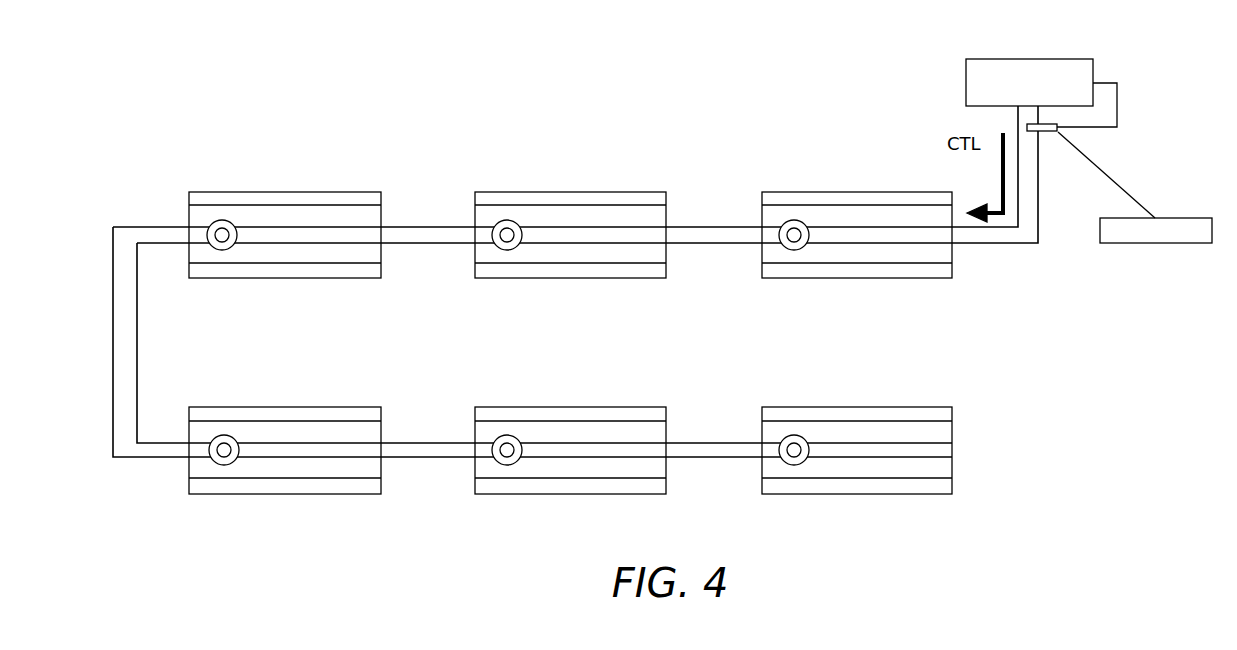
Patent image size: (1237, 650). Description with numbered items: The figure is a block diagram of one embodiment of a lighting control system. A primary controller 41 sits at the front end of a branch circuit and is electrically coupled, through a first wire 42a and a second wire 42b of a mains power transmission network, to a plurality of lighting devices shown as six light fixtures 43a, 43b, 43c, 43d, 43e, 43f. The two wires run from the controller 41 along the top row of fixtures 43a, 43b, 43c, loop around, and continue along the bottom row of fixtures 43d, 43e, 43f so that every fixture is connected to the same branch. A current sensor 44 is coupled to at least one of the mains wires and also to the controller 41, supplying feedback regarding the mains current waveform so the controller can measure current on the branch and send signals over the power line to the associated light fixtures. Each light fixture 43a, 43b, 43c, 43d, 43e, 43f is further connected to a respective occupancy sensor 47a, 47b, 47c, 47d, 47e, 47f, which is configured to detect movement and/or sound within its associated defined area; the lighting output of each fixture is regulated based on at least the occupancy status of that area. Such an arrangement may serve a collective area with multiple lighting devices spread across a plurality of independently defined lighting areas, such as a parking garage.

The primary controller 41 is at (1028, 59).
The first wire 42a is at (973, 243).
The second wire 42b is at (1038, 218).
The light fixture 43a is at (857, 192).
The light fixture 43b is at (570, 192).
The light fixture 43c is at (286, 192).
The light fixture 43d is at (286, 494).
The light fixture 43e is at (570, 494).
The light fixture 43f is at (857, 494).
The current sensor 44 is at (1168, 218).
The occupancy sensor 47a is at (794, 250).
The occupancy sensor 47b is at (507, 250).
The occupancy sensor 47c is at (222, 250).
The occupancy sensor 47d is at (224, 465).
The occupancy sensor 47e is at (507, 465).
The occupancy sensor 47f is at (794, 465).